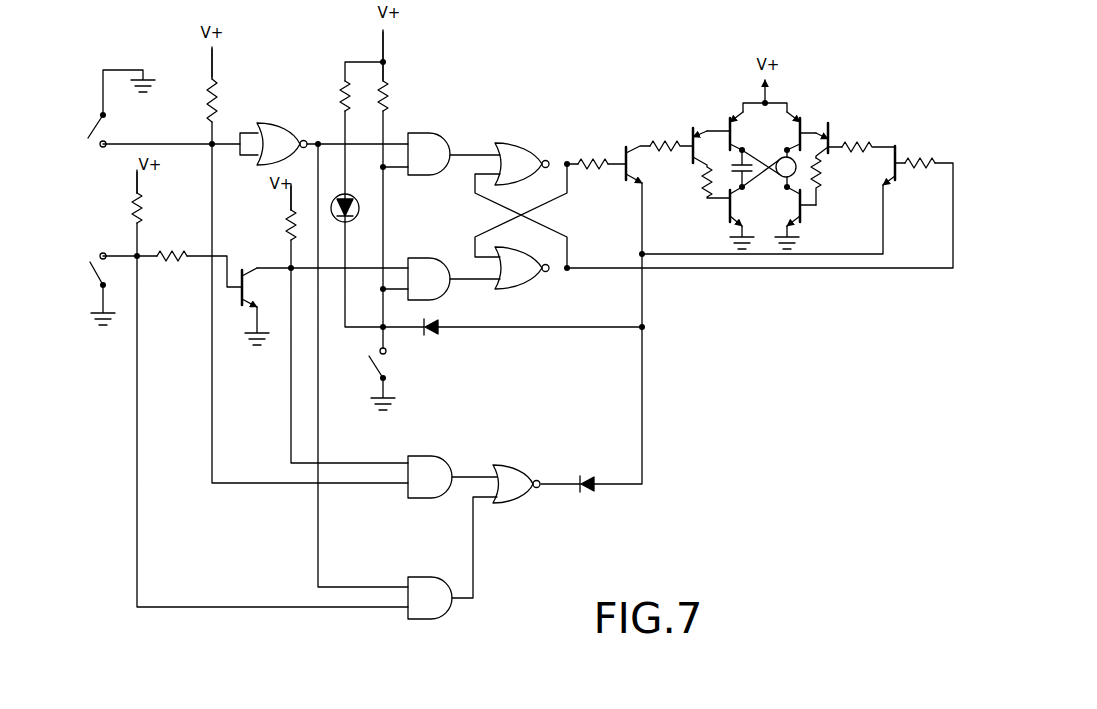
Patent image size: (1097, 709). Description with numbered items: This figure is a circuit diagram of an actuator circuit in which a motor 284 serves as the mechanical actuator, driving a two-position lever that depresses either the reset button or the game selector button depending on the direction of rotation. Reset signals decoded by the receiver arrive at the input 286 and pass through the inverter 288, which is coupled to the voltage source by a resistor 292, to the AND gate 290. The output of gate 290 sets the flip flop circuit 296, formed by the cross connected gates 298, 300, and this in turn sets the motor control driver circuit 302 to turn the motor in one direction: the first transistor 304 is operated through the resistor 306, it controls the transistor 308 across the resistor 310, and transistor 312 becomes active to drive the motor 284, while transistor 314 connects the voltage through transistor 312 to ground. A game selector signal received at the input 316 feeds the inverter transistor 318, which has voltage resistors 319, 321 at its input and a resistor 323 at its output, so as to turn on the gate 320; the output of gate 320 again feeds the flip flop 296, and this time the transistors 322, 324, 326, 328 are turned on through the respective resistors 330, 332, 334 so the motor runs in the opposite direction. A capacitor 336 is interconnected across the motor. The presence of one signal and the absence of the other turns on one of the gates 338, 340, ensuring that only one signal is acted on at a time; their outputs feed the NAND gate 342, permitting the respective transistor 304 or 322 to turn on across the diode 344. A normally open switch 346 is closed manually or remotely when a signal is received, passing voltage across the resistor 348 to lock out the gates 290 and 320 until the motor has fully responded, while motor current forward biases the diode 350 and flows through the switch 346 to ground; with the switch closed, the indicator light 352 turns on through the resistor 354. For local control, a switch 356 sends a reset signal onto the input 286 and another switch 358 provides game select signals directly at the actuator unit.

The motor 284 is at (794, 160).
The input 286 is at (103, 150).
The inverter 288 is at (285, 128).
The AND gate 290 is at (432, 133).
The resistor 292 is at (215, 92).
The flip flop circuit 296 is at (514, 141).
The gate 298 is at (532, 147).
The gate 300 is at (533, 286).
The motor control driver circuit 302 is at (689, 100).
The first transistor 304 is at (629, 148).
The resistor 306 is at (592, 160).
The transistor 308 is at (700, 128).
The resistor 310 is at (660, 152).
The transistor 312 is at (753, 131).
The transistor 314 is at (736, 215).
The input 316 is at (105, 252).
The inverter transistor 318 is at (238, 300).
The voltage resistor 319 is at (143, 204).
The gate 320 is at (434, 258).
The voltage resistor 321 is at (168, 270).
The transistor 322 is at (902, 146).
The resistor 323 is at (287, 222).
The transistor 324 is at (832, 128).
The transistor 326 is at (800, 118).
The transistor 328 is at (805, 214).
The resistor 330 is at (915, 172).
The resistor 332 is at (866, 161).
The resistor 334 is at (822, 190).
The capacitor 336 is at (734, 165).
The gate 338 is at (430, 456).
The gate 340 is at (432, 620).
The NAND gate 342 is at (520, 466).
The diode 344 is at (588, 492).
The normally open switch 346 is at (393, 370).
The resistor 348 is at (390, 96).
The diode 350 is at (440, 335).
The indicator light 352 is at (357, 207).
The resistor 354 is at (341, 95).
The switch 356 is at (112, 136).
The switch 358 is at (93, 282).